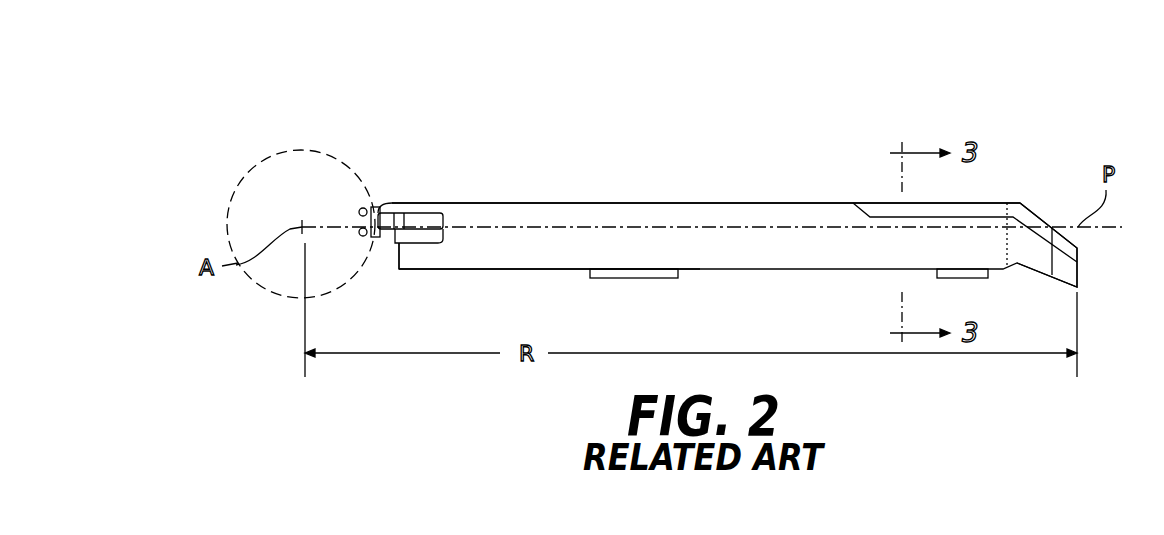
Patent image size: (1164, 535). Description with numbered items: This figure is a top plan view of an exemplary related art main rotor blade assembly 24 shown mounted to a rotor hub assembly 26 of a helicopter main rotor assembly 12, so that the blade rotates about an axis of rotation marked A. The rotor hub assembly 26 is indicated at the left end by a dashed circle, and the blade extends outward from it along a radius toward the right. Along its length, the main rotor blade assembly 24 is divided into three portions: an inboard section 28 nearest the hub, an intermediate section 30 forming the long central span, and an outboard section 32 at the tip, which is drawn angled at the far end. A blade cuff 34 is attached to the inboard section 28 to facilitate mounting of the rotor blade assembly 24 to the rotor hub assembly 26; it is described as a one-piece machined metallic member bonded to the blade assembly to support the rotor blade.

The main rotor assembly 12 is at (434, 184).
The main rotor blade assembly 24 is at (630, 119).
The rotor hub assembly 26 is at (247, 172).
The inboard section 28 is at (461, 262).
The intermediate section 30 is at (800, 246).
The outboard section 32 is at (994, 262).
The blade cuff 34 is at (422, 243).